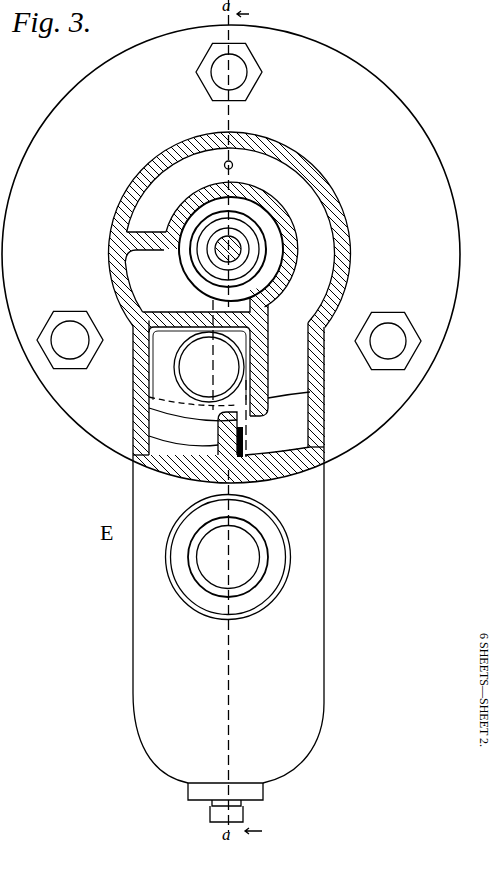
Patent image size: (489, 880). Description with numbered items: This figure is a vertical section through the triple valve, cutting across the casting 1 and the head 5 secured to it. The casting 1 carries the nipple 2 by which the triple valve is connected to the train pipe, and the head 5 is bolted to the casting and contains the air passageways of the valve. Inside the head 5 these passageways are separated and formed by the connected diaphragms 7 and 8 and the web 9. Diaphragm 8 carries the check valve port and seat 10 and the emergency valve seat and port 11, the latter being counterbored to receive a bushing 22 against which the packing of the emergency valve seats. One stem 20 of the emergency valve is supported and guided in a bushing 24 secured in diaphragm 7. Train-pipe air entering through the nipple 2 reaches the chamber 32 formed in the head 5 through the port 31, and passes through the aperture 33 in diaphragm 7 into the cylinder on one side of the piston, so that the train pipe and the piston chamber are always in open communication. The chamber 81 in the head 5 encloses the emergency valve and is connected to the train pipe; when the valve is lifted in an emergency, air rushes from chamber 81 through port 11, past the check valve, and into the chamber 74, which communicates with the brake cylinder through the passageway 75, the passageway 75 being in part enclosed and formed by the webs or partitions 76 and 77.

The casting 1 is at (133, 637).
The nipple 2 is at (195, 593).
The head 5 is at (343, 207).
The diaphragm 7 is at (303, 193).
The diaphragm 8 is at (155, 257).
The web 9 is at (173, 313).
The check valve port and seat 10 is at (180, 362).
The emergency valve seat and port 11 is at (190, 259).
The stem 20 is at (234, 254).
The bushing 22 is at (267, 230).
The bushing 24 is at (245, 248).
The port 31 is at (278, 432).
The chamber 32 is at (313, 252).
The aperture 33 is at (233, 165).
The chamber 74 is at (148, 368).
The passageway 75 is at (162, 423).
The web 76 is at (218, 448).
The web 77 is at (149, 399).
The chamber 81 is at (130, 271).